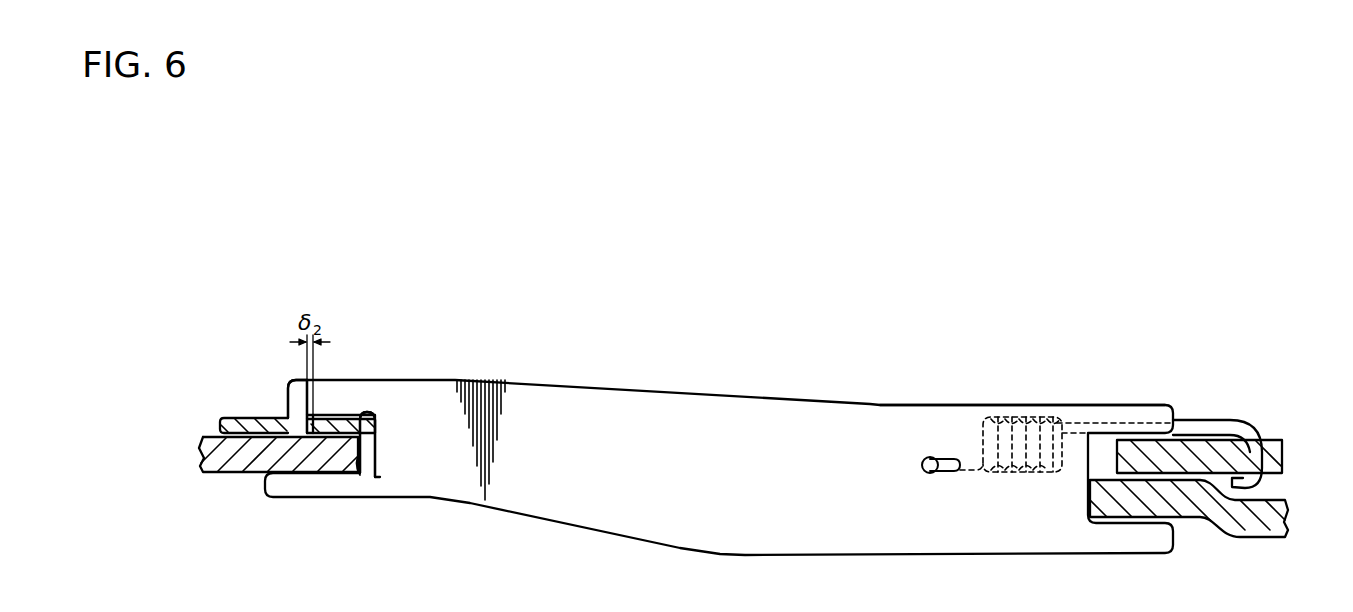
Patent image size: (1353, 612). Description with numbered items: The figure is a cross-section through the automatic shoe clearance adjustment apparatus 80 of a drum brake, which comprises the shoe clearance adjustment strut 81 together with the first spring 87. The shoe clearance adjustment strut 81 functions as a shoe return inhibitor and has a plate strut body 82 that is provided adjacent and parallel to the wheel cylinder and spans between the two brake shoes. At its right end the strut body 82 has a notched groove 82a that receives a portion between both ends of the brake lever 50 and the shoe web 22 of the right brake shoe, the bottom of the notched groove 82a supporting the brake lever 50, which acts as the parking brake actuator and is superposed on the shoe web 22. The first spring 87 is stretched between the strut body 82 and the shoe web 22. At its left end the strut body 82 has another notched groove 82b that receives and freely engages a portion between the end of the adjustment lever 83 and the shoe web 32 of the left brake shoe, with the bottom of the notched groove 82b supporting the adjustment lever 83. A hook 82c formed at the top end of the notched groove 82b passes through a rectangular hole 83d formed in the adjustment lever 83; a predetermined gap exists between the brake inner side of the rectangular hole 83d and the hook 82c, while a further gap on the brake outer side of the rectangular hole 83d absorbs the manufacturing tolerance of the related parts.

The shoe web 22 is at (1277, 458).
The shoe web 32 is at (242, 467).
The brake lever 50 is at (1250, 530).
The automatic shoe clearance adjustment apparatus 80 is at (1070, 297).
The shoe clearance adjustment strut 81 is at (870, 404).
The strut body 82 is at (812, 402).
The notched groove 82a is at (1090, 455).
The notched groove 82b is at (360, 475).
The hook 82c is at (297, 423).
The adjustment lever 83 is at (233, 418).
The rectangular hole 83d is at (307, 433).
The first spring 87 is at (1005, 420).